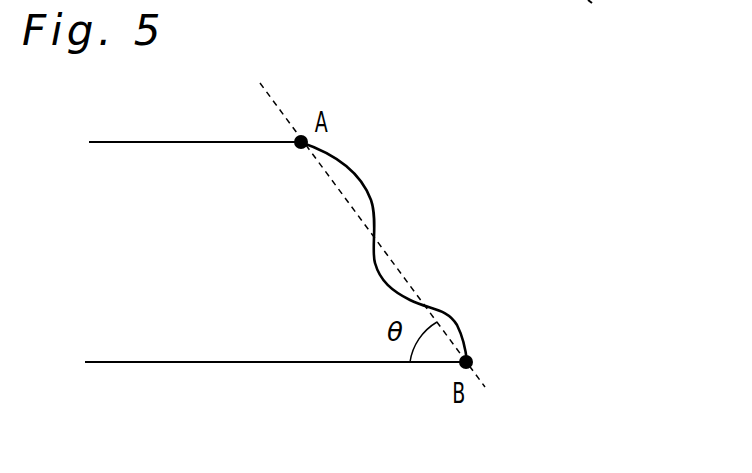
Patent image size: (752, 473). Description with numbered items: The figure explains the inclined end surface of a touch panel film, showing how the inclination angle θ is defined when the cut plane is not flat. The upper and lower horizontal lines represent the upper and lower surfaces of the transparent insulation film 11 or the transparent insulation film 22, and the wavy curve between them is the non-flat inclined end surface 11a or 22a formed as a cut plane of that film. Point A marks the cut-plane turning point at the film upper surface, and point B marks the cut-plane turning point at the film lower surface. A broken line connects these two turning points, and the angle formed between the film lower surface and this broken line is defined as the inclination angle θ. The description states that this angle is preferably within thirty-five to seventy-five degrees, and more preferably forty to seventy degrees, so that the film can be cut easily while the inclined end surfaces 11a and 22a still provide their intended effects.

The transparent insulation film 11 is at (275, 306).
The transparent insulation film 22 is at (269, 325).
The inclined end surface 11a is at (461, 252).
The inclined end surface 22a is at (403, 213).